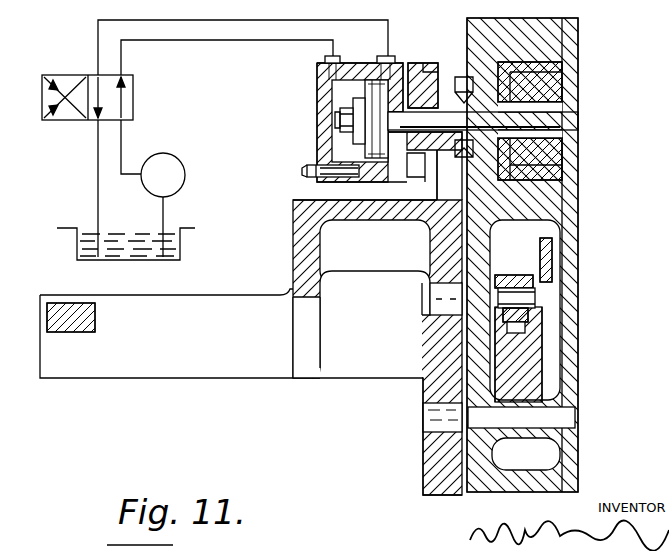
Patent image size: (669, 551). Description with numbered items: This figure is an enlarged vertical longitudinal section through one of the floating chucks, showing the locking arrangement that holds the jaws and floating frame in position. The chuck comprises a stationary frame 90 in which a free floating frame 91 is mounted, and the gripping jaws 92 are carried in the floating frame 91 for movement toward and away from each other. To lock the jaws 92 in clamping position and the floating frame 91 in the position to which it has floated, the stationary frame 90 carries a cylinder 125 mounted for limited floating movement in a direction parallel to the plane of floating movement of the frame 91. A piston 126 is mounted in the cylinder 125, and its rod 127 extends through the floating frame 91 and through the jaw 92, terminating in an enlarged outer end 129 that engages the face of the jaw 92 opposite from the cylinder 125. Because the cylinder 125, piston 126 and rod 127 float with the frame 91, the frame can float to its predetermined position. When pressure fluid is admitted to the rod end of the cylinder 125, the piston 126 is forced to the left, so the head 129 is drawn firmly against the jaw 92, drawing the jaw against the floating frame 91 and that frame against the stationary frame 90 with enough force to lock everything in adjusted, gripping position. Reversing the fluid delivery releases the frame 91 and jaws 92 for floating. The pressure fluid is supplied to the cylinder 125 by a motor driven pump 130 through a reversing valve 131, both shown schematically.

The stationary frame 90 is at (435, 462).
The floating frame 91 is at (572, 268).
The gripping jaws 92 is at (553, 155).
The cylinder 125 is at (340, 132).
The piston 126 is at (372, 100).
The rod 127 is at (447, 115).
The enlarged outer end 129 is at (570, 109).
The motor driven pump 130 is at (185, 173).
The reversing valve 131 is at (133, 95).